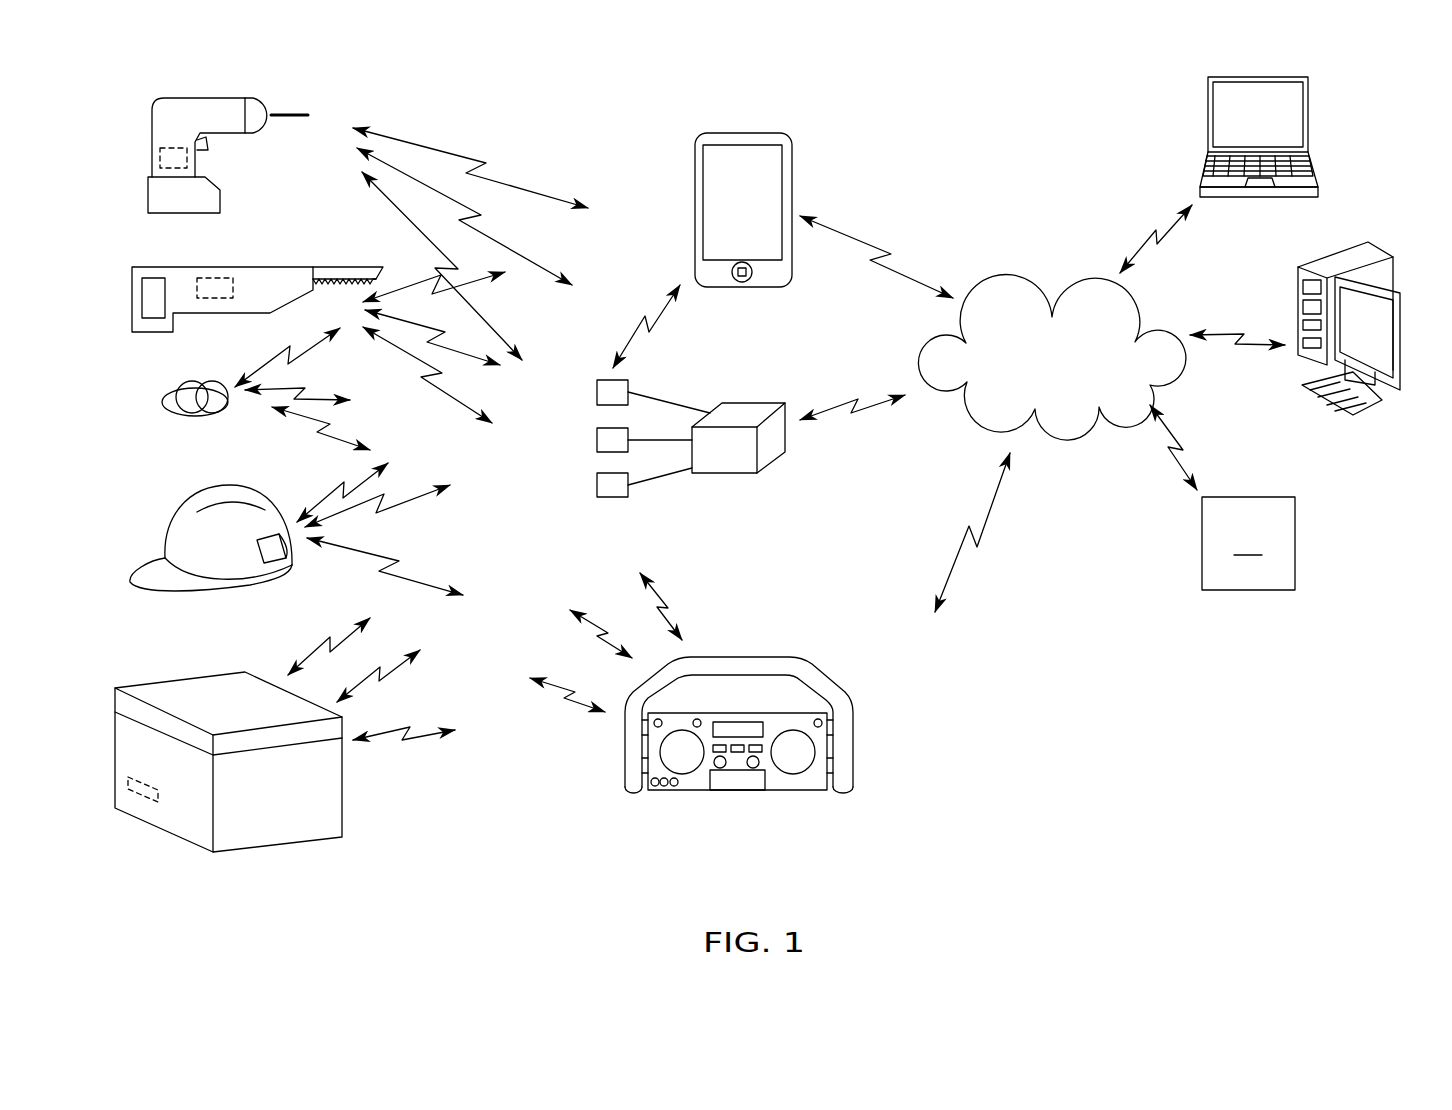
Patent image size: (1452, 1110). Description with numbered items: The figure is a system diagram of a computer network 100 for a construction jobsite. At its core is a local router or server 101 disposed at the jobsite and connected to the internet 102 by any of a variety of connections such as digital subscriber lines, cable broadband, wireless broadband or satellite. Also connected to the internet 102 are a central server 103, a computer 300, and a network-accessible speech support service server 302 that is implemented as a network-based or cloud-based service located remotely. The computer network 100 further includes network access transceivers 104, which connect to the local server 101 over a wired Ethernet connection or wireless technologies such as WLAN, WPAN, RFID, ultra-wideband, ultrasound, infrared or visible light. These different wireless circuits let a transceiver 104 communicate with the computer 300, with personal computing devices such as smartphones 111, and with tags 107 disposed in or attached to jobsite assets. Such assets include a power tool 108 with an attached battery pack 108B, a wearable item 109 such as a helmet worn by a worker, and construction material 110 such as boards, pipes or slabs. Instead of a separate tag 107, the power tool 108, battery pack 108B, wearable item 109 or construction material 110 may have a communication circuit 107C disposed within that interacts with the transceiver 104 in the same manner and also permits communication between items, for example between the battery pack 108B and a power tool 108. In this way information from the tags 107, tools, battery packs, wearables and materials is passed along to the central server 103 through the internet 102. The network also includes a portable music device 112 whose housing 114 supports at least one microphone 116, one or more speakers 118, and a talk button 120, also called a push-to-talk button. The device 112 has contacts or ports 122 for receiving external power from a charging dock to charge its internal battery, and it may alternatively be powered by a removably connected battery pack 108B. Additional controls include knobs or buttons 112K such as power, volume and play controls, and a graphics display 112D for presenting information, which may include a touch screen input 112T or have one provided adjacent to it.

The computer network 100 is at (1005, 155).
The local router or server 101 is at (780, 437).
The internet 102 is at (1077, 428).
The central server 103 is at (1385, 338).
The network access transceivers 104 is at (600, 392).
The tags 107 is at (197, 405).
The communication circuit 107C is at (215, 300).
The power tool 108 is at (172, 113).
The battery pack 108B is at (212, 197).
The wearable item 109 is at (220, 578).
The construction material 110 is at (330, 795).
The smartphone 111 is at (770, 165).
The portable music device 112 is at (775, 786).
The graphics display 112D is at (757, 727).
The buttons 112K is at (737, 755).
The touch screen input 112T is at (738, 728).
The housing 114 is at (813, 783).
The microphone 116 is at (822, 723).
The speakers 118 is at (805, 750).
The talk button 120 is at (698, 722).
The contacts or ports 122 is at (672, 786).
The computer 300 is at (1297, 122).
The speech support service server 302 is at (1248, 543).